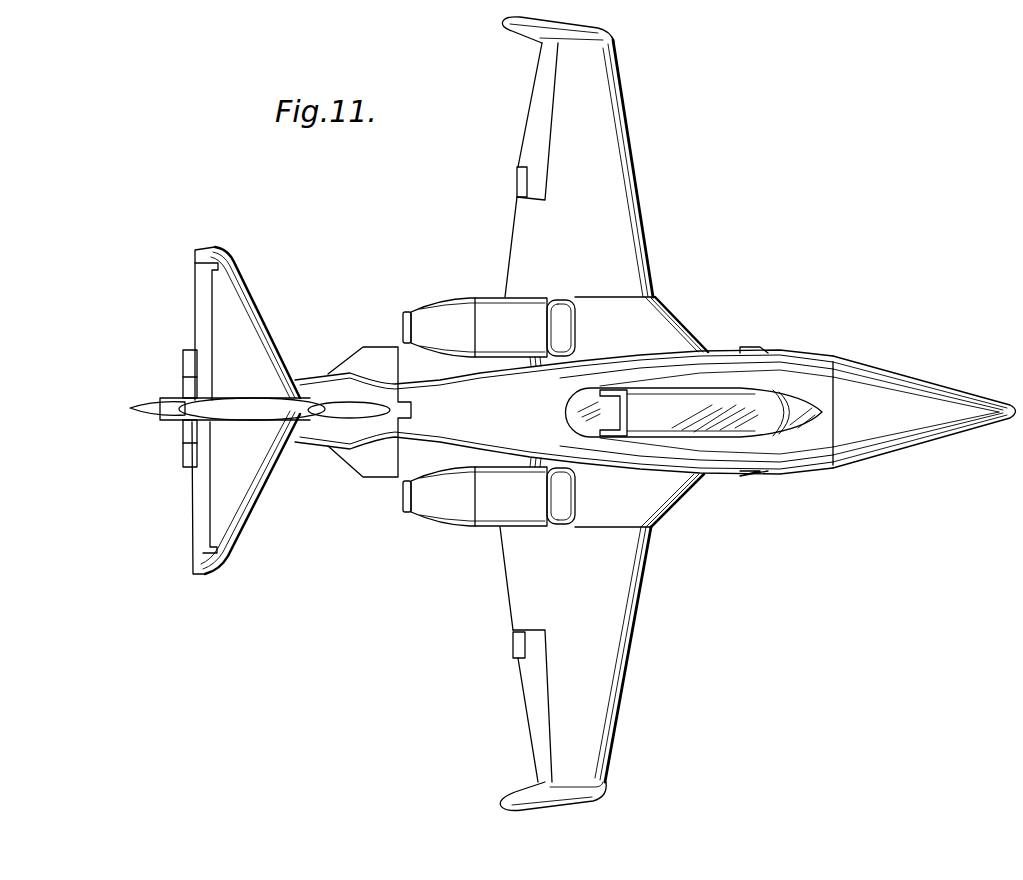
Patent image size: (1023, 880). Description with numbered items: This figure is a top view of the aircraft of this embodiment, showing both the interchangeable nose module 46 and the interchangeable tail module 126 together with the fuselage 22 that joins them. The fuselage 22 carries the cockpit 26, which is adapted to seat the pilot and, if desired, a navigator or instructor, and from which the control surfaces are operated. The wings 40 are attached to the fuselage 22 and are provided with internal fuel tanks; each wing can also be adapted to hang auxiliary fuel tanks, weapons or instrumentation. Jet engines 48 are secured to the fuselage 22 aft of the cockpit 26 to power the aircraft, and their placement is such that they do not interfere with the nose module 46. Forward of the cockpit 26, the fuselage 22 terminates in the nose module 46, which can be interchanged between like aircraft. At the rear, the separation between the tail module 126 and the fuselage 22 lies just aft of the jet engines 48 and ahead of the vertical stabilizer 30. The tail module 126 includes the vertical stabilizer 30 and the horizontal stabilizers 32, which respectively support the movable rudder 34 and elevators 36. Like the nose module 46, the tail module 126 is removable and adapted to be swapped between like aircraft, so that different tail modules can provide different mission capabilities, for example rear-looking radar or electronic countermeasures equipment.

The fuselage 22 is at (750, 360).
The cockpit 26 is at (750, 423).
The vertical stabilizer 30 is at (205, 417).
The horizontal stabilizer 32 is at (232, 290).
The rudder 34 is at (143, 405).
The elevators 36 is at (200, 312).
The wings 40 is at (607, 190).
The nose module 46 is at (937, 363).
The jet engines 48 is at (450, 317).
The tail module 126 is at (334, 343).